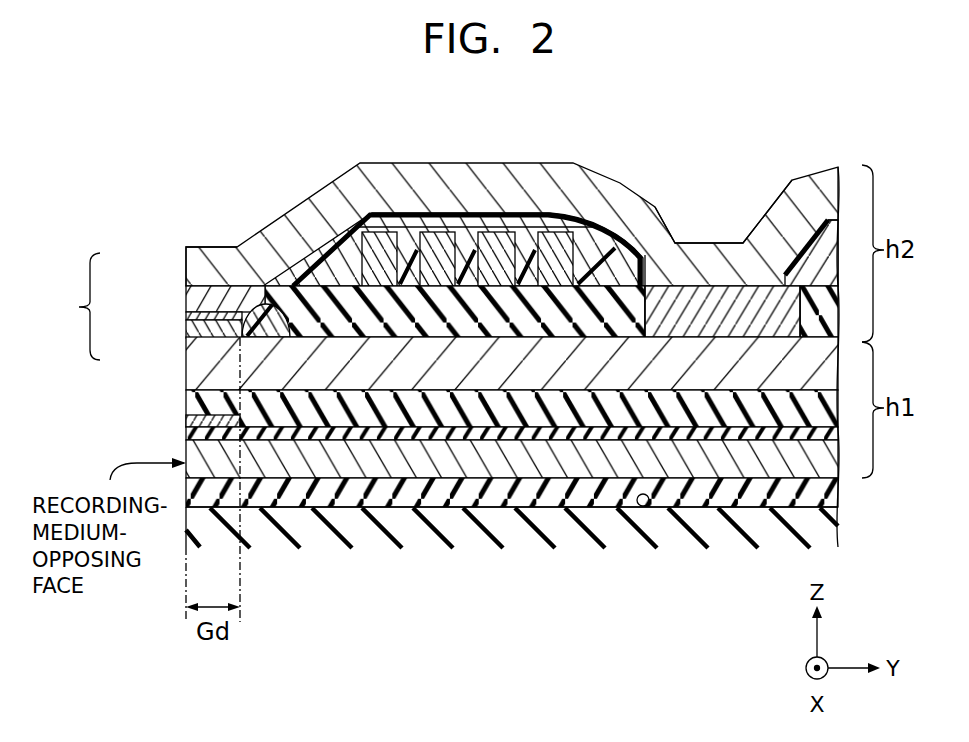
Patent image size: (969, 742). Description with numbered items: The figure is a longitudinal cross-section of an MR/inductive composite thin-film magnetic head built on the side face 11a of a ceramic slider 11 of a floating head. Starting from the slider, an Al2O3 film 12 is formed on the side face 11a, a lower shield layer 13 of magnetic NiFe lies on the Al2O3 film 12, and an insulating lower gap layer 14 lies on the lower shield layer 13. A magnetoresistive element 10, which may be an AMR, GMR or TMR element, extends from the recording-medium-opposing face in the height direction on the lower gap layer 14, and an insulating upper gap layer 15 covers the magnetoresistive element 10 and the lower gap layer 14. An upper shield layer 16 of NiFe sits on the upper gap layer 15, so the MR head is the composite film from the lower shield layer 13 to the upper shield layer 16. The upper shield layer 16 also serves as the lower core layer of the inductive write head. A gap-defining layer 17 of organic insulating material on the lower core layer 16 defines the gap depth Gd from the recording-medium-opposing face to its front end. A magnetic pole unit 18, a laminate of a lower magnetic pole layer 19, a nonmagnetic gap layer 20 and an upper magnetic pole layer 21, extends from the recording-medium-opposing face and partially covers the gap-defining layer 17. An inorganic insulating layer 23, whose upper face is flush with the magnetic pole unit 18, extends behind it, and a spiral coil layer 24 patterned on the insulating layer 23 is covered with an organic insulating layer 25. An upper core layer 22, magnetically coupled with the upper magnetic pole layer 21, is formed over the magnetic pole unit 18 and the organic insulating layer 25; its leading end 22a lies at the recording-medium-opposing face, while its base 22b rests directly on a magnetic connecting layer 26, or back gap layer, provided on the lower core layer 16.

The magnetoresistive element 10 is at (186, 420).
The slider 11 is at (715, 525).
The side face 11a is at (645, 506).
The Al2O3 film 12 is at (585, 492).
The lower shield layer 13 is at (530, 460).
The lower gap layer 14 is at (472, 435).
The upper gap layer 15 is at (410, 410).
The upper shield layer 16 is at (333, 365).
The gap-defining layer 17 is at (280, 336).
The magnetic pole unit 18 is at (72, 306).
The lower magnetic pole layer 19 is at (186, 326).
The nonmagnetic gap layer 20 is at (186, 317).
The upper magnetic pole layer 21 is at (186, 300).
The upper core layer 22 is at (410, 195).
The leading end 22a is at (217, 268).
The base 22b is at (718, 265).
The insulating layer 23 is at (603, 300).
The coil layer 24 is at (479, 222).
The organic insulating layer 25 is at (322, 255).
The magnetic connecting layer 26 is at (750, 330).